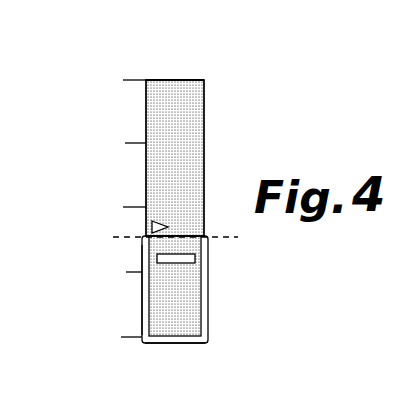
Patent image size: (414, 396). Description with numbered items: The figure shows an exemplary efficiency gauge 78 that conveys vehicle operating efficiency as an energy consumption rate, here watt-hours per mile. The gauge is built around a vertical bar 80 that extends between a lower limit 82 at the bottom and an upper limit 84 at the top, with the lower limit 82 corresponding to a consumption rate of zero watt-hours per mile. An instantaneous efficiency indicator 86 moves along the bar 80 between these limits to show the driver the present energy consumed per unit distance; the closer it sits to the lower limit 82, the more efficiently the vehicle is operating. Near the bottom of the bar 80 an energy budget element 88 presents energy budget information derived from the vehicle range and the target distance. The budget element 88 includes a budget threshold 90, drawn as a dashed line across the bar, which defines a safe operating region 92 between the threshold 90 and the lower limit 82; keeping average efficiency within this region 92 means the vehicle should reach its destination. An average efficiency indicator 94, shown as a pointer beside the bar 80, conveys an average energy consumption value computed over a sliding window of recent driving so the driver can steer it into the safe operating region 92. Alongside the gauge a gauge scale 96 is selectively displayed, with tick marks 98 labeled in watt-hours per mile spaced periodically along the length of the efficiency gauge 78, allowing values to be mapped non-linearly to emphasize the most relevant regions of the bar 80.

The efficiency gauge 78 is at (236, 66).
The bar 80 is at (204, 151).
The lower limit 82 is at (177, 343).
The upper limit 84 is at (178, 80).
The instantaneous efficiency indicator 86 is at (175, 263).
The energy budget element 88 is at (142, 282).
The budget threshold 90 is at (214, 240).
The safe operating region 92 is at (180, 293).
The average efficiency indicator 94 is at (152, 220).
The gauge scale 96 is at (80, 277).
The tick marks 98 is at (134, 70).